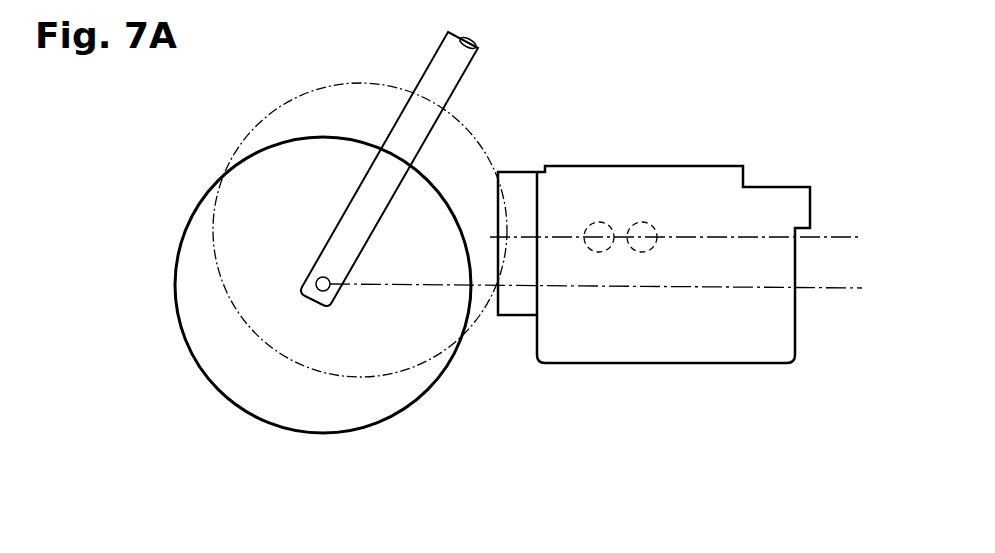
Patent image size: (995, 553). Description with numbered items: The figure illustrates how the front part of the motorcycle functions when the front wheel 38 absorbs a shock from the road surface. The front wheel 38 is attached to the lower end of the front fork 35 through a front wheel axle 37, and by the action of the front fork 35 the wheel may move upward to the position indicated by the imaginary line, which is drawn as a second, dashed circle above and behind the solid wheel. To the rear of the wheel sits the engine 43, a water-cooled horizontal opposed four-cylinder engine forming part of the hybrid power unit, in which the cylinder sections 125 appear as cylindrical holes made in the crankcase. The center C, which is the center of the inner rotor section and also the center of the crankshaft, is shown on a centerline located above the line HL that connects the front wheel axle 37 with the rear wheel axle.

The front fork 35 is at (433, 77).
The front wheel axle 37 is at (333, 292).
The front wheel 38 is at (220, 172).
The engine 43 is at (665, 340).
The cylinder sections 125 is at (598, 222).
The center of the inner rotor section C is at (838, 237).
The line connecting the front and rear wheel axles HL is at (826, 290).